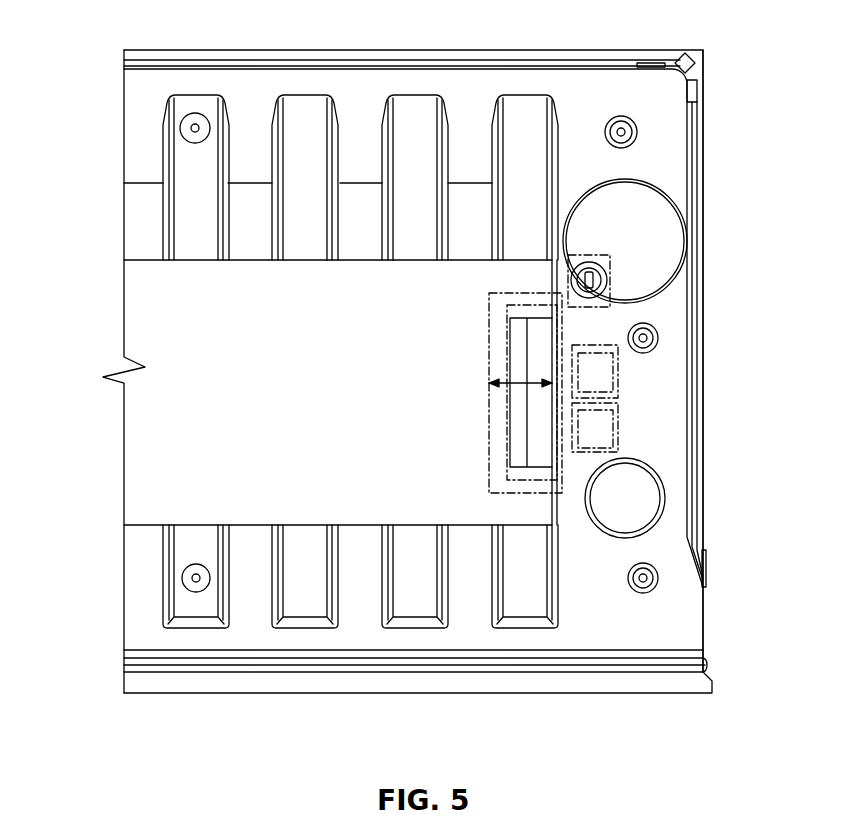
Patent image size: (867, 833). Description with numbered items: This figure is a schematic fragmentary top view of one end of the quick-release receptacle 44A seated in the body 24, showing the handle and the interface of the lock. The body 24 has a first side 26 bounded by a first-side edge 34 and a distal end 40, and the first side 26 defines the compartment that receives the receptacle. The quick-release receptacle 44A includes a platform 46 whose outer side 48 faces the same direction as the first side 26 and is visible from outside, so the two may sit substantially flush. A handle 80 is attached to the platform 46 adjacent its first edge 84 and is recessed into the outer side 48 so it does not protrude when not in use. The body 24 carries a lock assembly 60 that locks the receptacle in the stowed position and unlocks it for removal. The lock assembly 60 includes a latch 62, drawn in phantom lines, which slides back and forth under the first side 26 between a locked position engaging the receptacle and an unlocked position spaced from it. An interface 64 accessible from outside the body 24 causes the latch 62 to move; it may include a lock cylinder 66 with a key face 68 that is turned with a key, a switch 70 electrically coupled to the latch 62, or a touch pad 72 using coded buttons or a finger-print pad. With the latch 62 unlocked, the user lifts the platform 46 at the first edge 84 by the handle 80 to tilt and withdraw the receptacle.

The body 24 is at (703, 100).
The first side 26 is at (352, 85).
The first-side edge 34 is at (703, 347).
The distal end 40 is at (680, 695).
The quick-release receptacle 44A is at (86, 450).
The platform 46 is at (135, 339).
The outer side 48 is at (297, 392).
The lock assembly 60 is at (720, 265).
The latch 62 is at (488, 330).
The interface 64 is at (668, 441).
The lock cylinder 66 is at (575, 252).
The key face 68 is at (607, 279).
The switch 70 is at (607, 386).
The touch pad 72 is at (607, 445).
The handle 80 is at (518, 410).
The first edge 84 is at (554, 518).